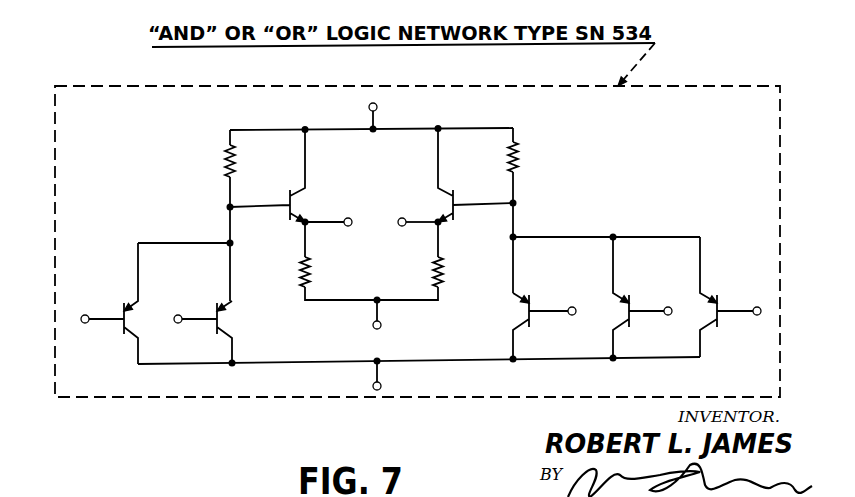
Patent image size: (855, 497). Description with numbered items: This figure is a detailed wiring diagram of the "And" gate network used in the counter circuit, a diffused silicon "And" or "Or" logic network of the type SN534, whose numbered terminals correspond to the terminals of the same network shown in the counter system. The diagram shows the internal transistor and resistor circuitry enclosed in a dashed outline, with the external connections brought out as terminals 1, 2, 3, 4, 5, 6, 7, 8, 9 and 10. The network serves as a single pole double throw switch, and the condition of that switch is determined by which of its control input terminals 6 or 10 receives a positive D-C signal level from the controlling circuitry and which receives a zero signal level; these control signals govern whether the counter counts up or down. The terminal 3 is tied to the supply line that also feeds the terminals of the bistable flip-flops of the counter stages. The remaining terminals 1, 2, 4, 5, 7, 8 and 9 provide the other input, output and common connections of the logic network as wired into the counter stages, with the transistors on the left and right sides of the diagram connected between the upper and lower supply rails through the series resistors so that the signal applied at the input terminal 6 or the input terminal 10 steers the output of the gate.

The terminal 1 is at (86, 314).
The terminal 2 is at (381, 327).
The terminal 3 is at (378, 107).
The terminal 4 is at (572, 306).
The terminal 5 is at (668, 306).
The input terminal 6 is at (180, 313).
The terminal 7 is at (352, 217).
The terminal 8 is at (382, 385).
The terminal 9 is at (399, 226).
The input terminal 10 is at (754, 306).